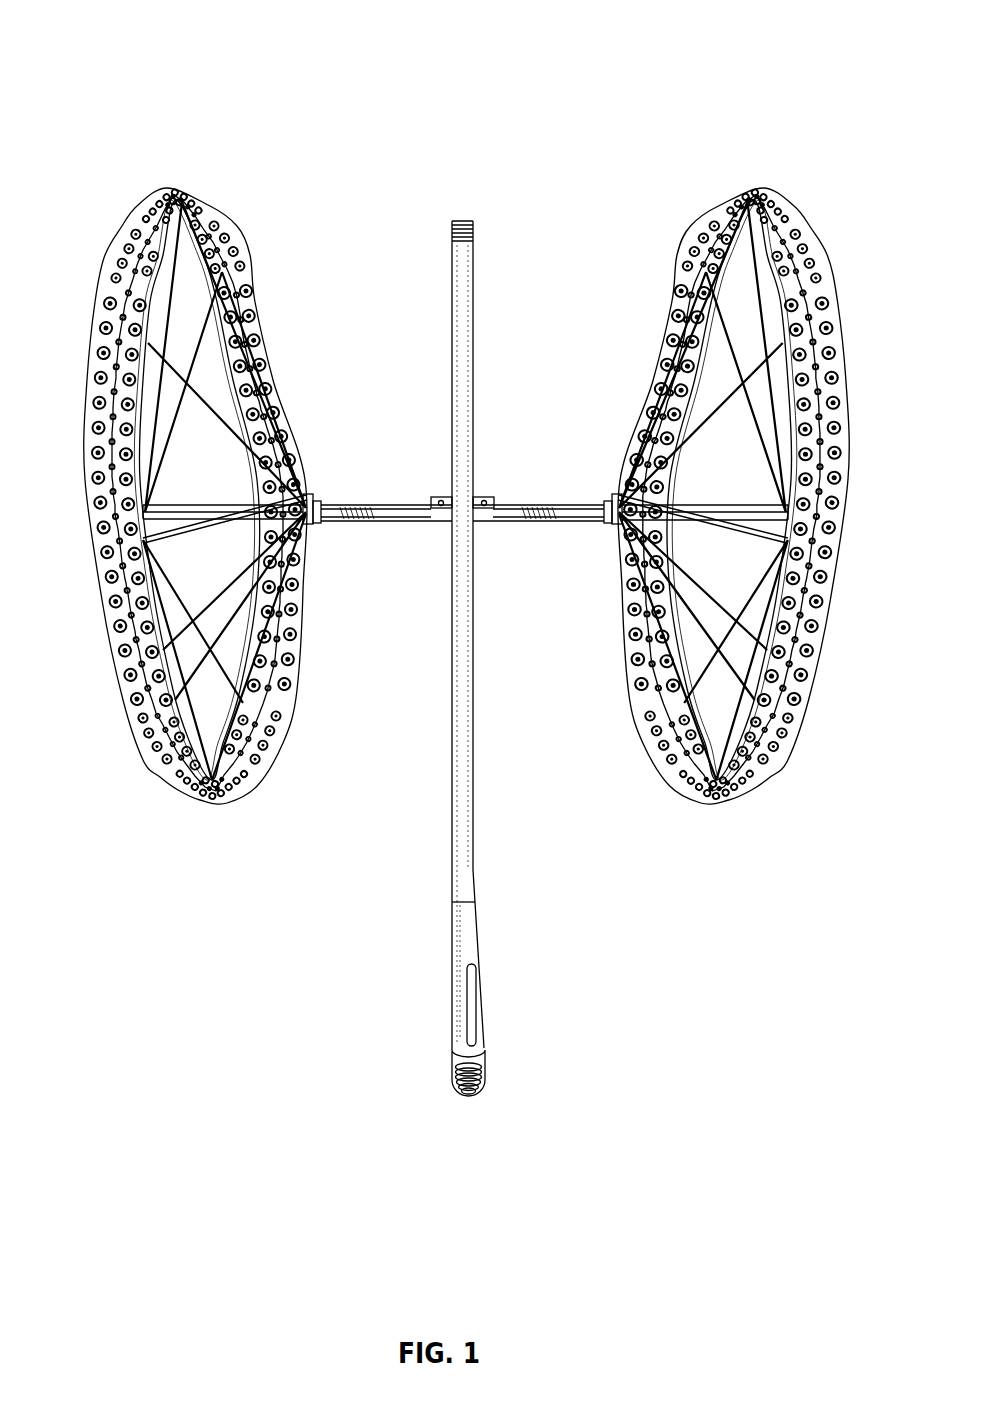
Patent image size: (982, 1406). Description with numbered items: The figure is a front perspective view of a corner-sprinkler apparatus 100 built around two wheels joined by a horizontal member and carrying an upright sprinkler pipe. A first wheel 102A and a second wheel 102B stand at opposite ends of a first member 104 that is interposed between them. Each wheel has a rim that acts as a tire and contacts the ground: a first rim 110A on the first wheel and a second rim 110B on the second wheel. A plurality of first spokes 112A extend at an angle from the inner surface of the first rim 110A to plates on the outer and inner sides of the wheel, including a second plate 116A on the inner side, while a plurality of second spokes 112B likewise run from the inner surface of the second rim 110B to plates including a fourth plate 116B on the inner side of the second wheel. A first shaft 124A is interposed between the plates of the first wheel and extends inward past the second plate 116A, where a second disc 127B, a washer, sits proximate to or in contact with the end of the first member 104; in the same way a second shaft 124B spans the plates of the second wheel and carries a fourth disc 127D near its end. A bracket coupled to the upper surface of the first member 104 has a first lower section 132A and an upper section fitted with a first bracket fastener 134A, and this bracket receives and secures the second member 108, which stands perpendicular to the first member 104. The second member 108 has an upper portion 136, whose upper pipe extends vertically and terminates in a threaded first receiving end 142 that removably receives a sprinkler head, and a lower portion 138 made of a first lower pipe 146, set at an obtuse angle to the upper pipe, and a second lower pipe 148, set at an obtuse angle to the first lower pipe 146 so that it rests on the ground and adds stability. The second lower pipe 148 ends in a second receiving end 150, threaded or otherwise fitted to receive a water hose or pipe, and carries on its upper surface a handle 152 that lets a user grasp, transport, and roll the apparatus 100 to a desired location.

The corner-sprinkler apparatus 100 is at (465, 580).
The first wheel 102A is at (203, 474).
The second wheel 102B is at (737, 483).
The first member 104 is at (322, 521).
The second member 108 is at (460, 657).
The first rim 110A is at (184, 190).
The second rim 110B is at (763, 192).
The first spokes 112A is at (140, 543).
The second spokes 112B is at (765, 333).
The second plate 116A is at (306, 492).
The fourth plate 116B is at (614, 524).
The first shaft 124A is at (145, 512).
The second shaft 124B is at (805, 515).
The second disc 127B is at (316, 501).
The fourth disc 127D is at (609, 501).
The first lower section 132A is at (484, 510).
The first bracket fastener 134A is at (441, 510).
The upper portion 136 is at (480, 286).
The lower portion 138 is at (455, 1015).
The first receiving end 142 is at (470, 218).
The first lower pipe 146 is at (474, 760).
The second lower pipe 148 is at (467, 925).
The second receiving end 150 is at (466, 1097).
The handle 152 is at (476, 1012).